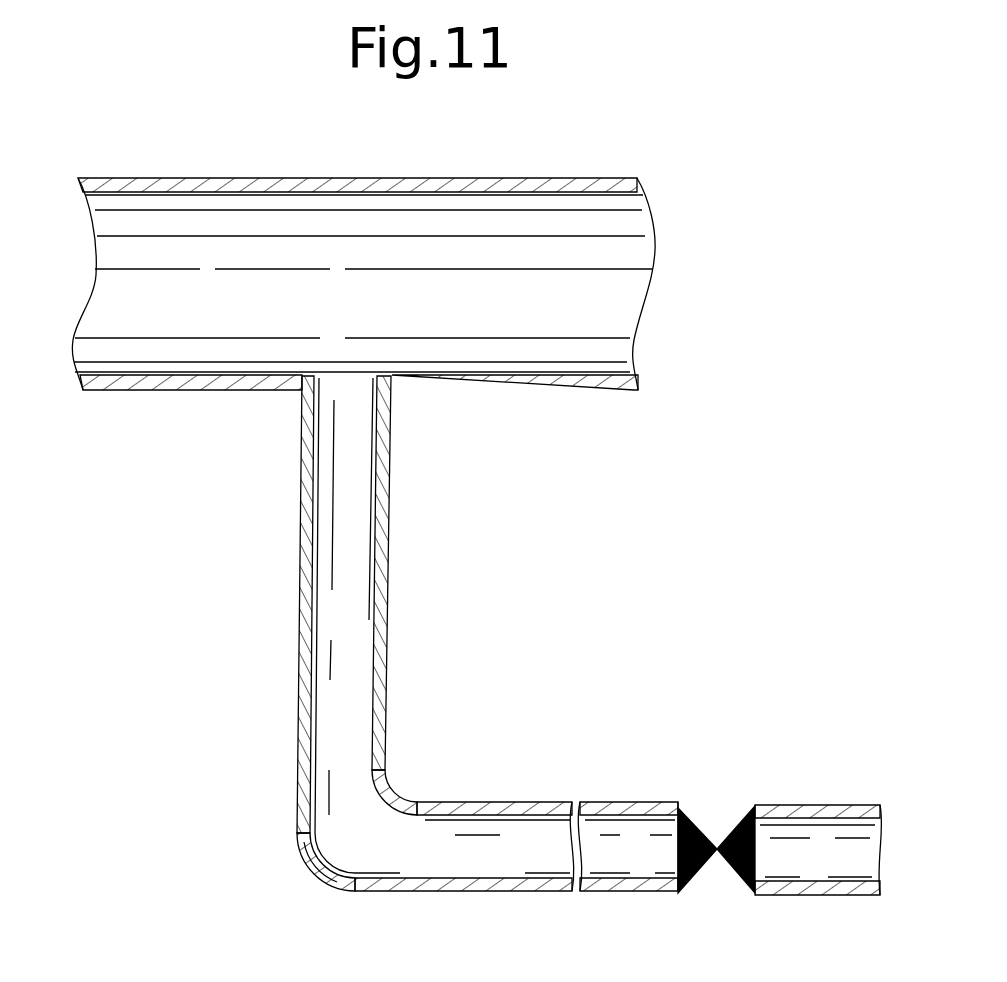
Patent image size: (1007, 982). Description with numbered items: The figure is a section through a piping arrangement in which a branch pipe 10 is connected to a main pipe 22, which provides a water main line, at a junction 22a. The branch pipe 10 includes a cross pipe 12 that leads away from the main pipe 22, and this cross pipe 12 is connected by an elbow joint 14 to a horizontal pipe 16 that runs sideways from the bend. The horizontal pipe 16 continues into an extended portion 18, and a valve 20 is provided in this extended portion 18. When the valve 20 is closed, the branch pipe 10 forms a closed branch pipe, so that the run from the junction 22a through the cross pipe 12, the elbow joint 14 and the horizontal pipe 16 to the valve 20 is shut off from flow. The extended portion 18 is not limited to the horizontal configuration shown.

The branch pipe 10 is at (266, 507).
The cross pipe 12 is at (298, 585).
The elbow joint 14 is at (308, 868).
The horizontal pipe portion 16 is at (505, 893).
The extended portion 18 is at (620, 893).
The valve 20 is at (718, 830).
The main pipe 22 is at (571, 178).
The junction 22a is at (326, 375).